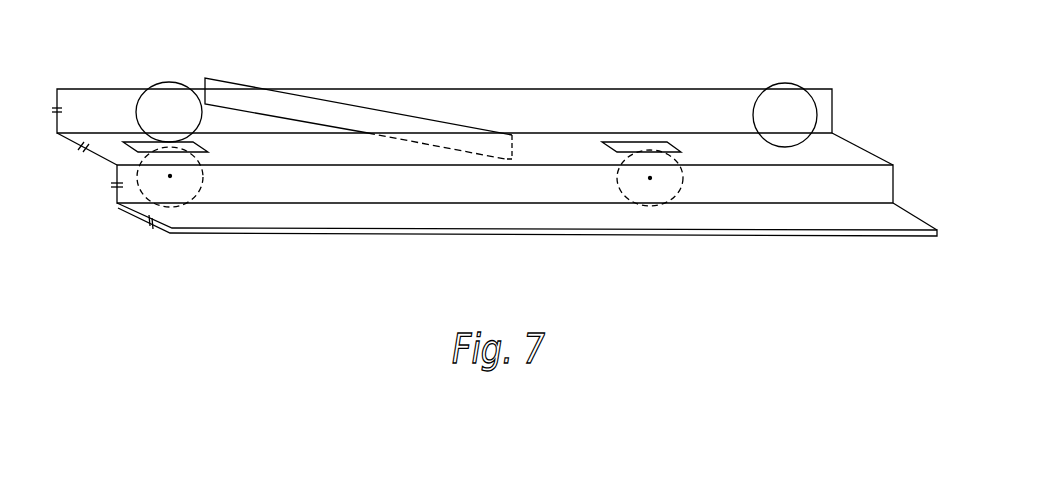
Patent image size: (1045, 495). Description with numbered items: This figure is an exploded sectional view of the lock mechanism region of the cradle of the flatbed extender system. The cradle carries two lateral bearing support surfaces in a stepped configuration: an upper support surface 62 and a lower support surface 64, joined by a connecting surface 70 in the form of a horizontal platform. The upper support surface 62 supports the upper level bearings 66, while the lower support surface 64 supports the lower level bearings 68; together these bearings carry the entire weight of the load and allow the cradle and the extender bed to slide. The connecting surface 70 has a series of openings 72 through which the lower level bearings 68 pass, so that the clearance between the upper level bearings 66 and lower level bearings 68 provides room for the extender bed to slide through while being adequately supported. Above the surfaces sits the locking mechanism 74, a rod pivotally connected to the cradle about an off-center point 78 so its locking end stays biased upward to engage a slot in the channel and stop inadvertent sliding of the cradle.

The upper support surface 62 is at (98, 114).
The lower support surface 64 is at (117, 193).
The upper level bearings 66 is at (785, 108).
The lower level bearings 68 is at (665, 190).
The connecting surface 70 is at (520, 160).
The openings 72 is at (625, 148).
The locking mechanism 74 is at (258, 82).
The pivot point 78 is at (487, 145).